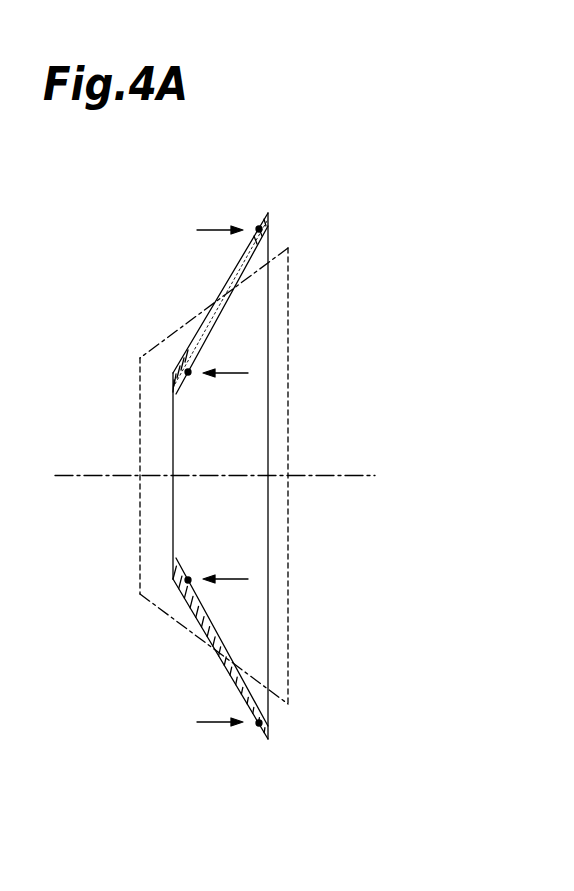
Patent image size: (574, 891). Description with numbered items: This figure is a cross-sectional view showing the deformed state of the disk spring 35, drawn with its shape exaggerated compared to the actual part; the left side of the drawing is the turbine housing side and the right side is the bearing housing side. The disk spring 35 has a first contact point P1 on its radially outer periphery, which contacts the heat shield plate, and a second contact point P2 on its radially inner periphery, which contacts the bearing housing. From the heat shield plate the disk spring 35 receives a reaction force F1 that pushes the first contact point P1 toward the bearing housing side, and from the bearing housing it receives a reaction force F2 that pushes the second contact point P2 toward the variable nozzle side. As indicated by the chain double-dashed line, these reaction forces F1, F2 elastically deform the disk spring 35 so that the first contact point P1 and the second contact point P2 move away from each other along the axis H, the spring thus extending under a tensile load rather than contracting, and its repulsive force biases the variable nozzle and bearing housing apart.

The disk spring 35 is at (204, 318).
The first contact point P1 is at (259, 227).
The second contact point P2 is at (186, 372).
The reaction force F1 is at (212, 229).
The reaction force F2 is at (248, 373).
The horizontal axis H is at (346, 479).